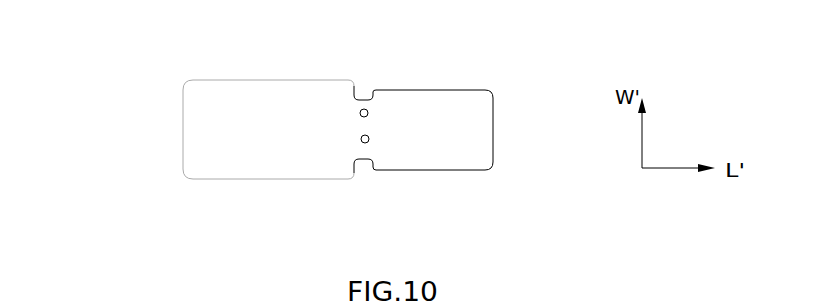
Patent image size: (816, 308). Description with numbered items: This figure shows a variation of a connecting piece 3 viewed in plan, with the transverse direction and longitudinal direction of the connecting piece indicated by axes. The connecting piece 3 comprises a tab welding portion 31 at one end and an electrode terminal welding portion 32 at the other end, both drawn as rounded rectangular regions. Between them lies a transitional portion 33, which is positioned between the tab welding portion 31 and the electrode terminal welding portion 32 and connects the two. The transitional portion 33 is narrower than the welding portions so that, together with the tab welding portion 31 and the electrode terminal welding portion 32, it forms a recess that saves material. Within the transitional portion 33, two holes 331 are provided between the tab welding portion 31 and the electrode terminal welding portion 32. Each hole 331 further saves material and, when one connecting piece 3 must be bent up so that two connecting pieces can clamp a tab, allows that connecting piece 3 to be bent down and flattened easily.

The connecting piece 3 is at (115, 137).
The tab welding portion 31 is at (240, 108).
The electrode terminal welding portion 32 is at (468, 137).
The transitional portion 33 is at (363, 150).
The hole 331 is at (363, 108).